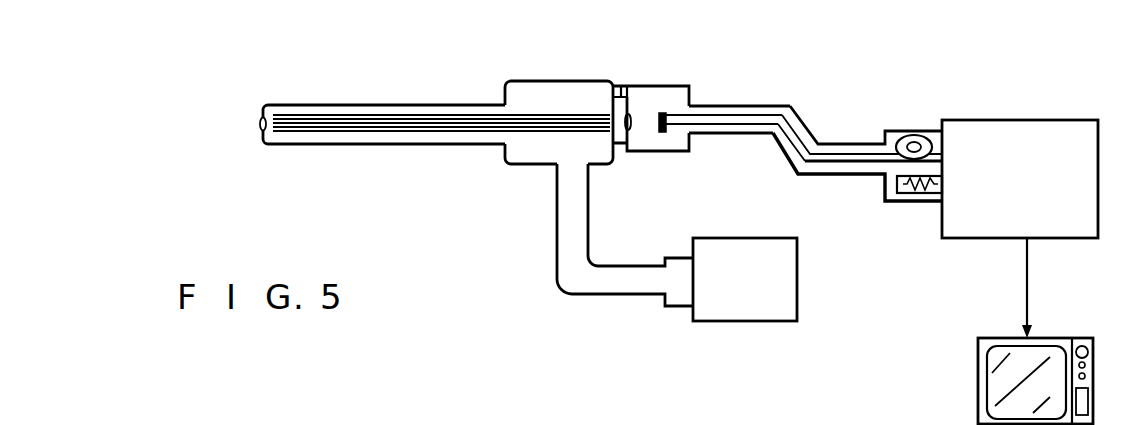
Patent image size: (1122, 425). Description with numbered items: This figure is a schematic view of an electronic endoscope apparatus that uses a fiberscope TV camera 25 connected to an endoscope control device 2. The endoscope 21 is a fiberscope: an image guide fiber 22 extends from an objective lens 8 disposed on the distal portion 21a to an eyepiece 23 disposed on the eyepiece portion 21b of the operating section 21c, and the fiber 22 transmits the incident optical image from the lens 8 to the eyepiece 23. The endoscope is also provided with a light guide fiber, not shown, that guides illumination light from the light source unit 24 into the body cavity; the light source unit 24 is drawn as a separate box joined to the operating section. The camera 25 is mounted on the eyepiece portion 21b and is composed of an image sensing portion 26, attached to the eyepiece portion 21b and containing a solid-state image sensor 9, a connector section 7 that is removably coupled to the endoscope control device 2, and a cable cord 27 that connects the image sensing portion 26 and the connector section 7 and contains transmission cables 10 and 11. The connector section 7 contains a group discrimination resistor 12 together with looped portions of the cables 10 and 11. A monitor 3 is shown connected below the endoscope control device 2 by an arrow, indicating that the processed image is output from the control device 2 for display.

The endoscope control device 2 is at (1019, 119).
The monitor 3 is at (1050, 337).
The connector section 7 is at (913, 130).
The objective lens 8 is at (262, 130).
The solid-state image sensor 9 is at (667, 113).
The transmission cable 10 is at (708, 133).
The transmission cable 11 is at (758, 124).
The group discrimination resistor 12 is at (917, 193).
The endoscope 21 is at (433, 94).
The distal portion 21a is at (274, 104).
The eyepiece portion 21b is at (622, 86).
The operating section 21c is at (541, 80).
The image guide fiber 22 is at (372, 131).
The eyepiece 23 is at (631, 130).
The light source unit 24 is at (797, 285).
The TV camera 25 is at (787, 104).
The image sensing portion 26 is at (677, 85).
The cable cord 27 is at (829, 174).